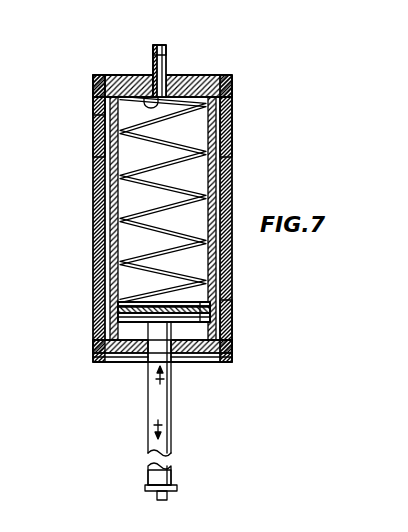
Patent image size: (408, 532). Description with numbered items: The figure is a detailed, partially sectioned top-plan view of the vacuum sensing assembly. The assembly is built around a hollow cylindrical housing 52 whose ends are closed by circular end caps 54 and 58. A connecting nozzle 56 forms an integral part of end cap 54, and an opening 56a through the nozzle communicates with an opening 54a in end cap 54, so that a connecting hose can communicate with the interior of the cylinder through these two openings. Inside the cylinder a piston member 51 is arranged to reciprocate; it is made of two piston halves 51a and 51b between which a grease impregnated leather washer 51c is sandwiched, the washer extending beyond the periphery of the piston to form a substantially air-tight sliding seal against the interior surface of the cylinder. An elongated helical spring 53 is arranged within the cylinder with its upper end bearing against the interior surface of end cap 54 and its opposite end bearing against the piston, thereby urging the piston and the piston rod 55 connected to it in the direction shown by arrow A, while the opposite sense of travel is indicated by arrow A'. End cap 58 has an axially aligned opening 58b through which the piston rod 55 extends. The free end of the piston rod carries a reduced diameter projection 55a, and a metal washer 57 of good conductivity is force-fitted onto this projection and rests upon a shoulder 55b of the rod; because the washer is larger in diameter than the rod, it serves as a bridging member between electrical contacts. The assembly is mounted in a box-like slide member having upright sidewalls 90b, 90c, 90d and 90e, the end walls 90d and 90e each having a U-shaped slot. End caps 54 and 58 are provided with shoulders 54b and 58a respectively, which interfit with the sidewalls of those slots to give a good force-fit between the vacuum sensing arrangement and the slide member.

The hollow cylindrical housing 52 is at (93, 149).
The upright sidewall 90b is at (234, 116).
The upright sidewall 90c is at (93, 111).
The upright sidewall 90d is at (104, 75).
The upright sidewall 90e is at (235, 360).
The end cap 54 is at (181, 75).
The opening 54a is at (138, 75).
The shoulder 54b is at (226, 73).
The connecting nozzle 56 is at (162, 47).
The opening 56a is at (156, 46).
The elongated helical spring 53 is at (129, 221).
The piston member 51 is at (232, 287).
The piston half 51a is at (118, 307).
The piston half 51b is at (118, 319).
The grease impregnated leather washer 51c is at (232, 318).
The end cap 58 is at (142, 362).
The shoulder 58a is at (112, 362).
The opening 58b is at (233, 360).
The piston rod 55 is at (172, 403).
The reduced diameter projection 55a is at (145, 488).
The shoulder 55b is at (147, 476).
The metal washer 57 is at (180, 487).
The arrow A is at (181, 432).
The flow direction A' is at (185, 381).